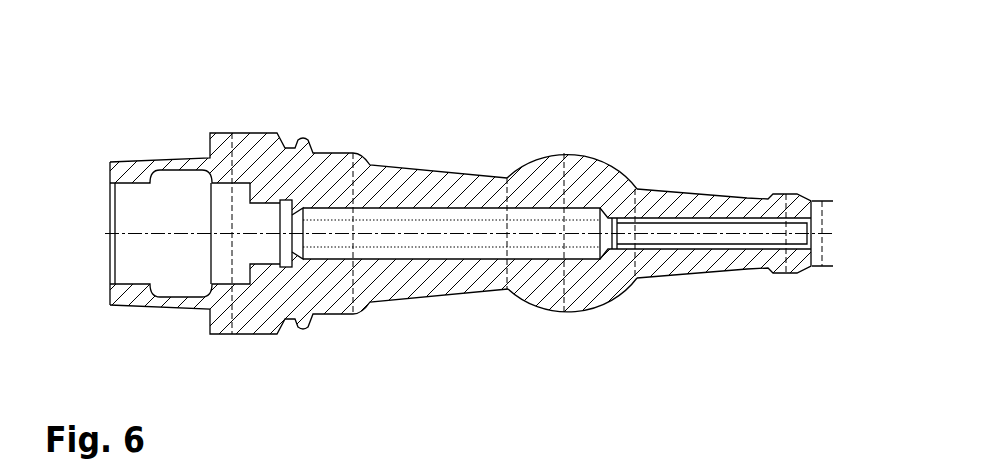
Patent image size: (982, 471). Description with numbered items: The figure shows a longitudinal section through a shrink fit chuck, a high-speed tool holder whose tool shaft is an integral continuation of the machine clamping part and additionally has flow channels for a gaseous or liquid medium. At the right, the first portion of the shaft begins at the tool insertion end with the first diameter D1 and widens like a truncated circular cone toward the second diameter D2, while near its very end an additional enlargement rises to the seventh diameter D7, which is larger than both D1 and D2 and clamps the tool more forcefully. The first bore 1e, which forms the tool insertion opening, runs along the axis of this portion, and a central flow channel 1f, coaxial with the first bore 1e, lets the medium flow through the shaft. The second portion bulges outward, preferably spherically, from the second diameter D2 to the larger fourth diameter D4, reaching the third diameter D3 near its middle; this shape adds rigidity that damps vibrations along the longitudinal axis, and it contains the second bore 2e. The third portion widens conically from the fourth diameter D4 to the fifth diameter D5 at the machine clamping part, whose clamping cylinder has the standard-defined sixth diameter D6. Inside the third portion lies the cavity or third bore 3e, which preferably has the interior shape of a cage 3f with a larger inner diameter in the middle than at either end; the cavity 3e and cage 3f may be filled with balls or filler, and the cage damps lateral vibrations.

The first diameter D1 is at (822, 290).
The second diameter D2 is at (635, 305).
The third diameter D3 is at (564, 338).
The fourth diameter D4 is at (507, 315).
The fifth diameter D5 is at (353, 360).
The sixth diameter D6 is at (232, 355).
The seventh diameter D7 is at (786, 300).
The third bore 3e is at (383, 240).
The cage 3f is at (443, 250).
The second bore 2e is at (588, 248).
The flow channel 1f is at (672, 220).
The first bore 1e is at (718, 232).